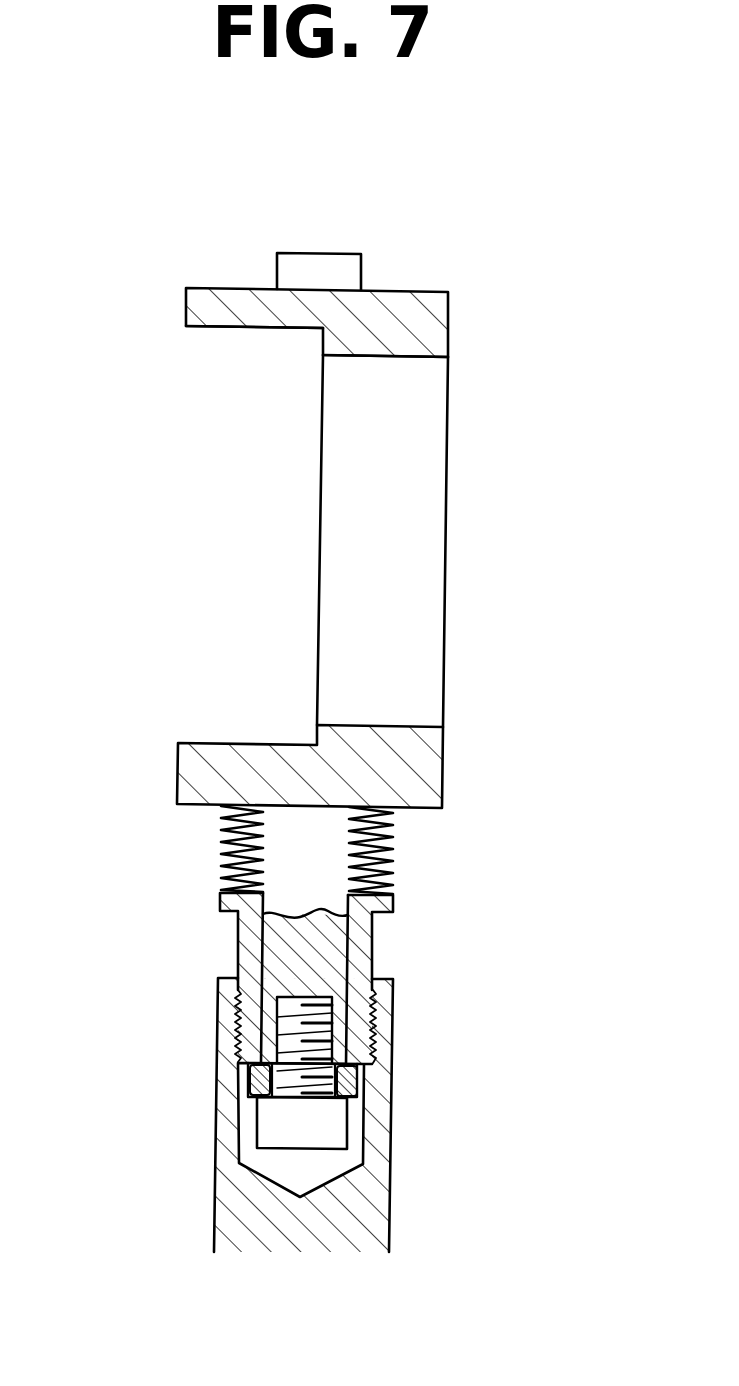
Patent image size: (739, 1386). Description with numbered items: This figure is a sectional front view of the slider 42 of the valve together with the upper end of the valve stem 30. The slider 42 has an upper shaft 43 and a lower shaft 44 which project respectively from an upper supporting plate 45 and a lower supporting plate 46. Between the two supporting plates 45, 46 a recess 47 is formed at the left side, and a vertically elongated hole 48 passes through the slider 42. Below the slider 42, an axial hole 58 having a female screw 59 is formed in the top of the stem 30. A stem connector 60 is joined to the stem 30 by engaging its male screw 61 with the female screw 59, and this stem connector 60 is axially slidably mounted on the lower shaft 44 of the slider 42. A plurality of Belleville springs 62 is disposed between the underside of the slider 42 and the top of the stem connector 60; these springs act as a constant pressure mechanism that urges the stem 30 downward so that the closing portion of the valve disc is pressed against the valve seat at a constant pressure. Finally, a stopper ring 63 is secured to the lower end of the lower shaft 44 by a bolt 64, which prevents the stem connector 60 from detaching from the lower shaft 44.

The stem 30 is at (390, 1207).
The slider 42 is at (460, 227).
The upper shaft 43 is at (335, 253).
The lower shaft 44 is at (325, 953).
The upper supporting plate 45 is at (185, 297).
The lower supporting plate 46 is at (176, 764).
The recess 47 is at (220, 328).
The vertically elongated hole 48 is at (407, 355).
The axial hole 58 is at (353, 1113).
The female screw 59 is at (237, 1053).
The stem connector 60 is at (238, 956).
The male screw 61 is at (375, 1035).
The Belleville springs 62 is at (220, 850).
The stopper ring 63 is at (250, 1070).
The bolt 64 is at (257, 1125).